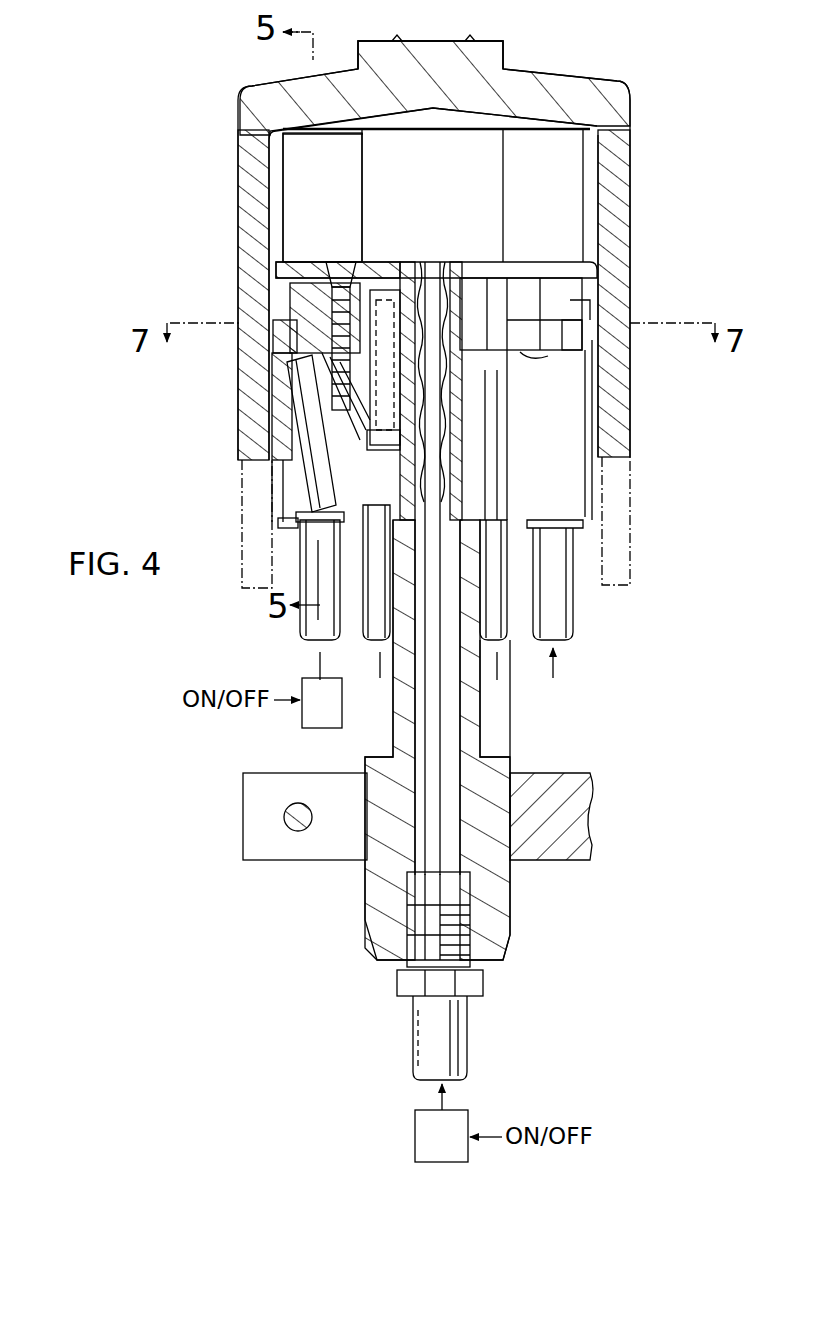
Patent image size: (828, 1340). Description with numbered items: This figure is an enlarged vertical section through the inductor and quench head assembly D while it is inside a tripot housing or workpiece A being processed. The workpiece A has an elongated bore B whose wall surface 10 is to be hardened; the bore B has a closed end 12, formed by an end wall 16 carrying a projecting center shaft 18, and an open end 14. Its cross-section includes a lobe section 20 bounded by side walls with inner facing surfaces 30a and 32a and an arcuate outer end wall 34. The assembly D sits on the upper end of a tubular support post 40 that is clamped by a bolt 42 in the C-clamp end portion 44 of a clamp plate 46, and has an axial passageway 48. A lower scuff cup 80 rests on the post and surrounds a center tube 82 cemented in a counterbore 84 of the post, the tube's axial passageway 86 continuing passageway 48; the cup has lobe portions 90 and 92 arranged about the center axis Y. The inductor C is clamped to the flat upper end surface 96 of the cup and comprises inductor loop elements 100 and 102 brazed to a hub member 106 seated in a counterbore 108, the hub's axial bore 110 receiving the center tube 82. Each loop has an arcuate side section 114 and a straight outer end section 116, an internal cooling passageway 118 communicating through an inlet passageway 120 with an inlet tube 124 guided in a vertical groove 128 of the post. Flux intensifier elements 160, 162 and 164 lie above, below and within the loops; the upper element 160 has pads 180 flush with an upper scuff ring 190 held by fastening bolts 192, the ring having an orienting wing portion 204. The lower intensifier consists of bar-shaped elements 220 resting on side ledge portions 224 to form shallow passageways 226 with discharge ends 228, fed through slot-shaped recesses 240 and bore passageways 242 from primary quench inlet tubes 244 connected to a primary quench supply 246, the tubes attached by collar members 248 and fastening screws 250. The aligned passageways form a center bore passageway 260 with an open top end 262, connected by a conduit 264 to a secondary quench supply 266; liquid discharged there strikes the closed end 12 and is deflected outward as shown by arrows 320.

The wall surface 10 is at (598, 207).
The closed end 12 is at (490, 131).
The open end 14 is at (596, 463).
The end wall 16 is at (566, 90).
The center shaft 18 is at (505, 56).
The lobe section 20 is at (283, 195).
The inner facing surface 30a is at (563, 172).
The inner facing surface 32a is at (300, 163).
The arcuate outer end wall 34 is at (256, 182).
The tubular support post 40 is at (476, 722).
The bolt 42 is at (284, 817).
The C-clamp end portion 44 is at (282, 860).
The clamp plate 46 is at (558, 860).
The axial passageway 48 is at (420, 740).
The lower scuff cup 80 is at (568, 492).
The center tube 82 is at (490, 487).
The counterbore 84 is at (510, 595).
The axial passageway 86 is at (480, 512).
The lobe portion 90 is at (290, 506).
The lobe portion 92 is at (600, 435).
The flat upper end surface 96 is at (386, 262).
The inductor loop element 100 is at (286, 345).
The inductor loop element 102 is at (603, 302).
The hub member 106 is at (440, 415).
The counterbore 108 is at (329, 432).
The axial bore 110 is at (476, 306).
The arcuate side section 114 is at (545, 266).
The straight outer end section 116 is at (286, 318).
The passageway 118 is at (305, 262).
The inlet passageway 120 is at (466, 366).
The inlet tube 124 is at (358, 640).
The vertical groove 128 is at (500, 698).
The flux intensifier element 160 is at (285, 286).
The lower flux intensifier means 162 is at (290, 360).
The flux intensifier element 164 is at (330, 262).
The pad 180 is at (520, 262).
The upper scuff ring 190 is at (378, 262).
The fastening bolt 192 is at (346, 262).
The orienting wing portion 204 is at (275, 256).
The bar-shaped element 220 is at (290, 378).
The side ledge portion 224 is at (520, 356).
The transverse shallow passageway 226 is at (290, 398).
The discharge end 228 is at (600, 378).
The slot-shaped recess 240 is at (290, 418).
The bore passageway 242 is at (290, 458).
The primary quench inlet tube 244 is at (300, 625).
The primary quench supply 246 is at (306, 678).
The collar member 248 is at (296, 530).
The fastening screw 250 is at (580, 556).
The center bore passageway 260 is at (455, 740).
The open top end 262 is at (444, 262).
The conduit 264 is at (420, 1032).
The secondary quench supply 266 is at (415, 1138).
The arrows 320 is at (470, 262).
The workpiece A is at (630, 84).
The elongated bore B is at (334, 152).
The inductor C is at (285, 306).
The inductor and quench head assembly D is at (275, 490).
The center axis Y is at (503, 458).